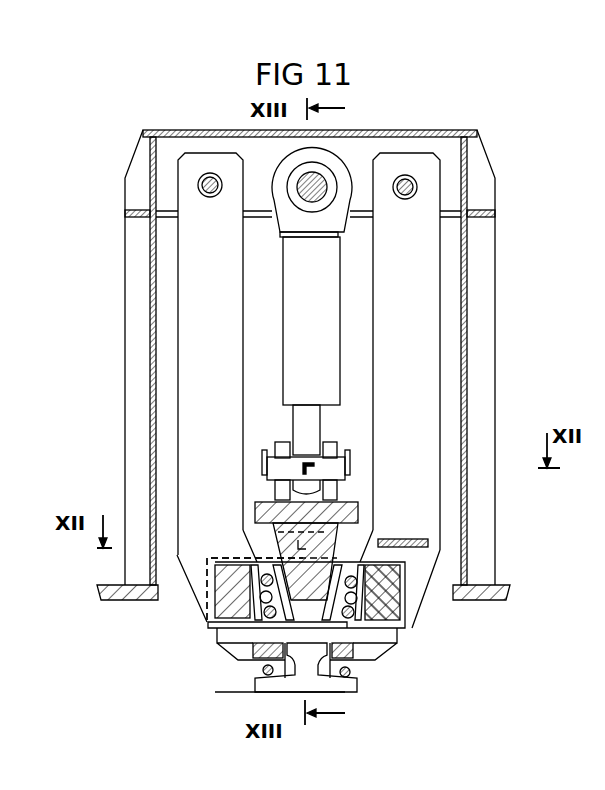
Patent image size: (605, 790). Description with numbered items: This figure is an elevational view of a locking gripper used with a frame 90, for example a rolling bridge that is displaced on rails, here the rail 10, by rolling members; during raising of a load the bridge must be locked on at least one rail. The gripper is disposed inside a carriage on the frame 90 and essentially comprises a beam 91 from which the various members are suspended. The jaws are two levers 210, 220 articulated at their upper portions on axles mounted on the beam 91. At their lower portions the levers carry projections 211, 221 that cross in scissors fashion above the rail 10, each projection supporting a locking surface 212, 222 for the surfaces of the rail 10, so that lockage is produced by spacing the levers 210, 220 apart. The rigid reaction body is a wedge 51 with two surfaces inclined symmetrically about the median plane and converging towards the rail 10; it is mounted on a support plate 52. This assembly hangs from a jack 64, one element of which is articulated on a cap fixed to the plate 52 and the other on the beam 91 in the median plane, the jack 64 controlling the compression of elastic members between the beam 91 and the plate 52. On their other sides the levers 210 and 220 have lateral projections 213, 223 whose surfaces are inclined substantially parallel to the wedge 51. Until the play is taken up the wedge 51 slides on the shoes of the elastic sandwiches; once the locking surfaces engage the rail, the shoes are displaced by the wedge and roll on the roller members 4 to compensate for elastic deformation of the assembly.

The beam 91 is at (165, 168).
The frame 90 is at (100, 592).
The lever 210 is at (212, 340).
The lever 220 is at (418, 312).
The jack 64 is at (318, 275).
The support plate 52 is at (260, 512).
The wedge 51 is at (265, 545).
The roller members 4 is at (347, 580).
The lateral projection 223 is at (235, 597).
The lateral projection 213 is at (382, 588).
The projection 211 is at (285, 555).
The projection 221 is at (225, 645).
The locking surface 222 is at (250, 652).
The locking surface 212 is at (357, 652).
The rail 10 is at (350, 675).